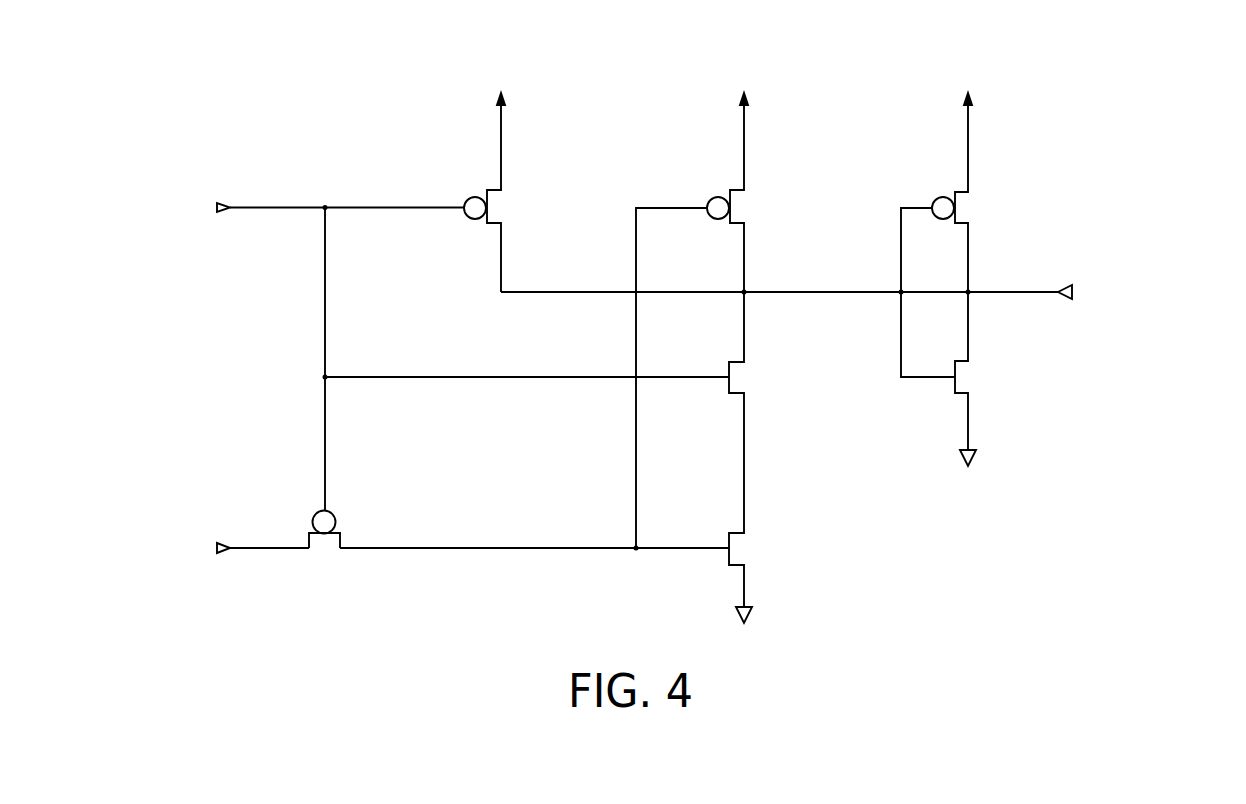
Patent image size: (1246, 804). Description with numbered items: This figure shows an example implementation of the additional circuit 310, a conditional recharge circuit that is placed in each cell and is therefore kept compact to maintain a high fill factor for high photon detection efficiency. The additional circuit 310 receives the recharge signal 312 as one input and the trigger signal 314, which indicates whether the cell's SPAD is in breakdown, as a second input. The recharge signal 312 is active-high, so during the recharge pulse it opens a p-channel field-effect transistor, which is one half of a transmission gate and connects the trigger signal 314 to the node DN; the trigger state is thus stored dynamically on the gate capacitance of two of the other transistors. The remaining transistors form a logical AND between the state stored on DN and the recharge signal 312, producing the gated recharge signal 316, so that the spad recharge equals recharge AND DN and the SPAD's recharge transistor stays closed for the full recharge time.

The additional circuit 310 is at (257, 78).
The recharge signal 312 is at (217, 215).
The trigger signal 314 is at (219, 556).
The gated recharge signal 316 is at (1064, 301).